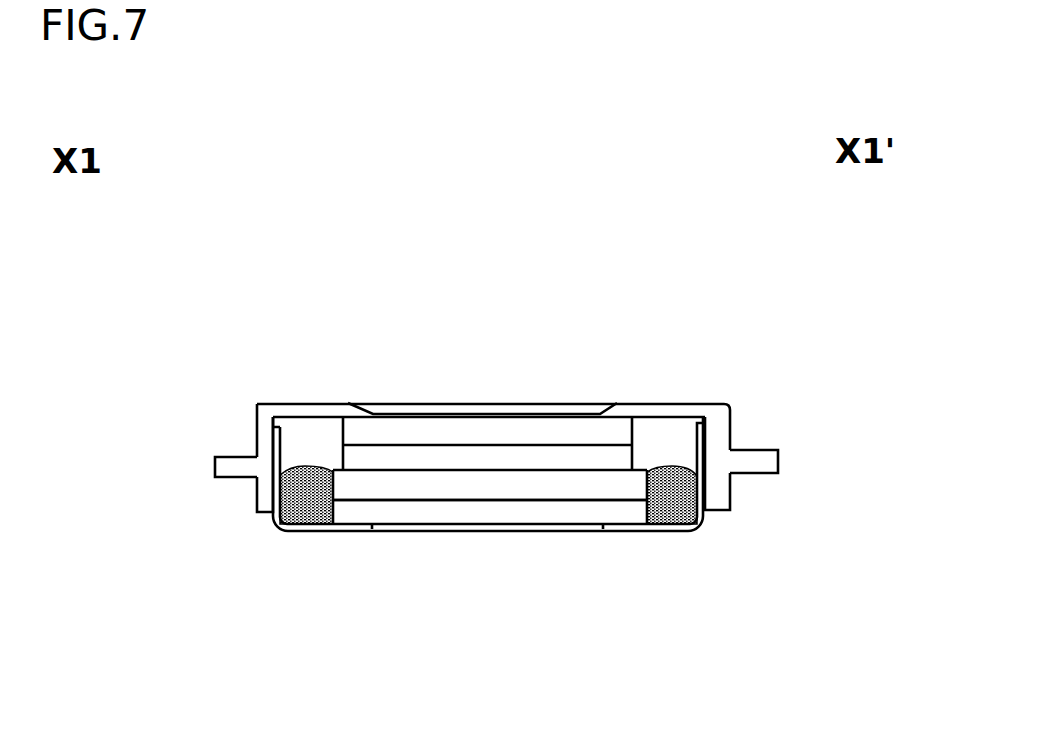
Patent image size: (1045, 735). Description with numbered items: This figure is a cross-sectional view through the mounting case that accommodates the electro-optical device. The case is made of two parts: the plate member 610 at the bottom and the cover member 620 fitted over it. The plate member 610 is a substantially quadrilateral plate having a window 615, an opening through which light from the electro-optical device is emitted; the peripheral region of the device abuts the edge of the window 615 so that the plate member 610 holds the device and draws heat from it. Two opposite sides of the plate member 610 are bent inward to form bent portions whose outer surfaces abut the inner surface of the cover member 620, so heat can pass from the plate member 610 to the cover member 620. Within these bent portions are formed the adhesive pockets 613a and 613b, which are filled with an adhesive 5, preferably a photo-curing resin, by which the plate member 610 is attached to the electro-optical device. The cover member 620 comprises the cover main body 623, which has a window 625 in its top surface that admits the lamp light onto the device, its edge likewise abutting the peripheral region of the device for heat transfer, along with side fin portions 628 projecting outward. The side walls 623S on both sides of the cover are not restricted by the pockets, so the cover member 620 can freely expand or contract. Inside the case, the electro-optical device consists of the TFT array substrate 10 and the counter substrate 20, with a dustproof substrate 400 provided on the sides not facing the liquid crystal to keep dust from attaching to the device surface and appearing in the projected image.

The adhesive 5 is at (308, 467).
The TFT array substrate 10 is at (610, 480).
The counter substrate 20 is at (410, 455).
The dustproof substrate 400 is at (463, 430).
The plate member 610 is at (526, 513).
The adhesive pocket 613a is at (706, 424).
The adhesive pocket 613b is at (273, 487).
The window 615 is at (479, 555).
The cover member 620 is at (502, 375).
The cover main body 623 is at (640, 403).
The side wall 623S is at (262, 435).
The window 625 is at (524, 383).
The side fin portion 628 is at (228, 478).